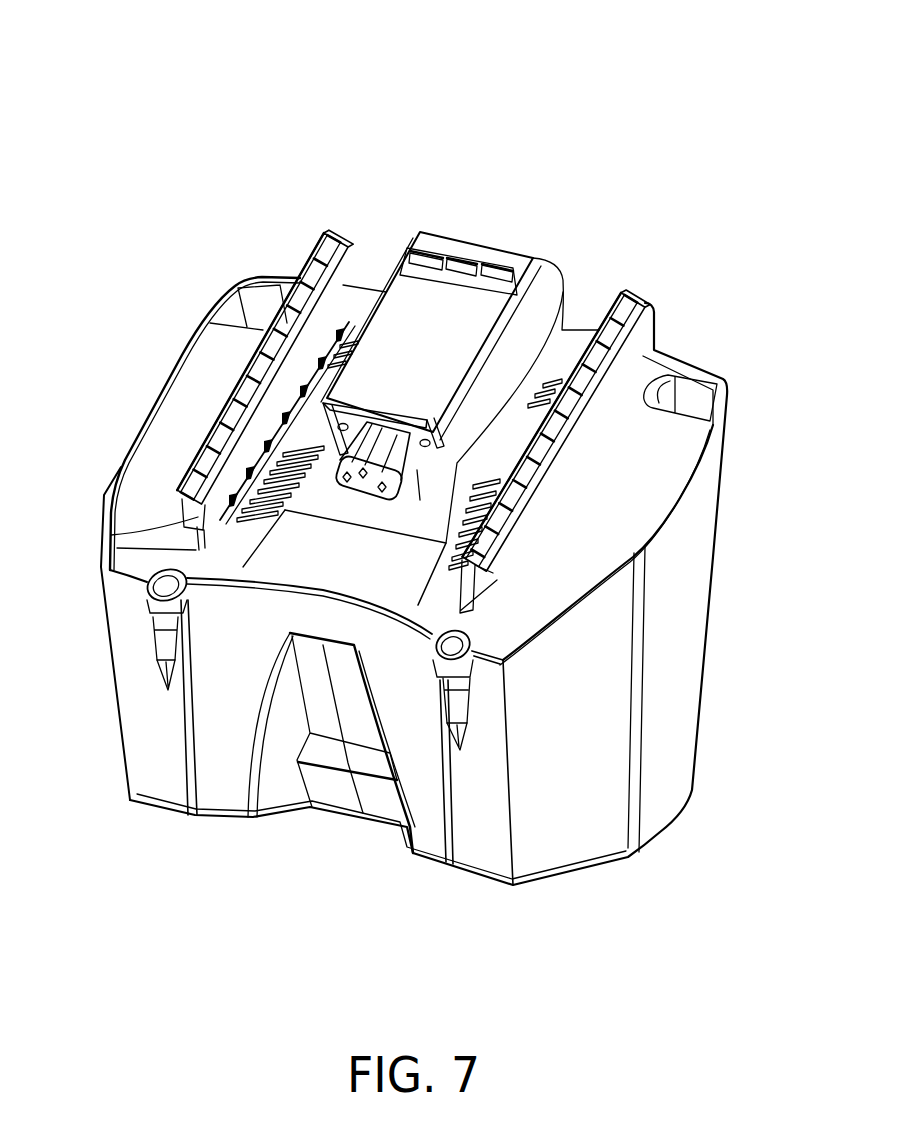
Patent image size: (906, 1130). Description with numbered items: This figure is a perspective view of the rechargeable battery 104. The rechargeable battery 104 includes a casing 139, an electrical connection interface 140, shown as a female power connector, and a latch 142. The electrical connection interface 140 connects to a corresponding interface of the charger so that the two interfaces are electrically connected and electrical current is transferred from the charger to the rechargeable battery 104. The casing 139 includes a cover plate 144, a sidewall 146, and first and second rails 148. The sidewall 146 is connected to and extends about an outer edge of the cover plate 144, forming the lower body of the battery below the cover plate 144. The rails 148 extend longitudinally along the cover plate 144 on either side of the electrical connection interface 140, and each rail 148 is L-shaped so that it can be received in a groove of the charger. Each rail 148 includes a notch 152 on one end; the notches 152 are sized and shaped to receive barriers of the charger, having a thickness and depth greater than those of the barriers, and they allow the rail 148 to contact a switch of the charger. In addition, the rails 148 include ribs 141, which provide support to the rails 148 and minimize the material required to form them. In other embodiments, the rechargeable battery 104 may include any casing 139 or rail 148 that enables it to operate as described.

The rechargeable battery 104 is at (181, 100).
The casing 139 is at (748, 382).
The electrical connection interface 140 is at (523, 322).
The ribs 141 is at (290, 300).
The latch 142 is at (462, 255).
The cover plate 144 is at (168, 420).
The sidewall 146 is at (672, 740).
The rails 148 is at (349, 238).
The notch 152 is at (110, 534).